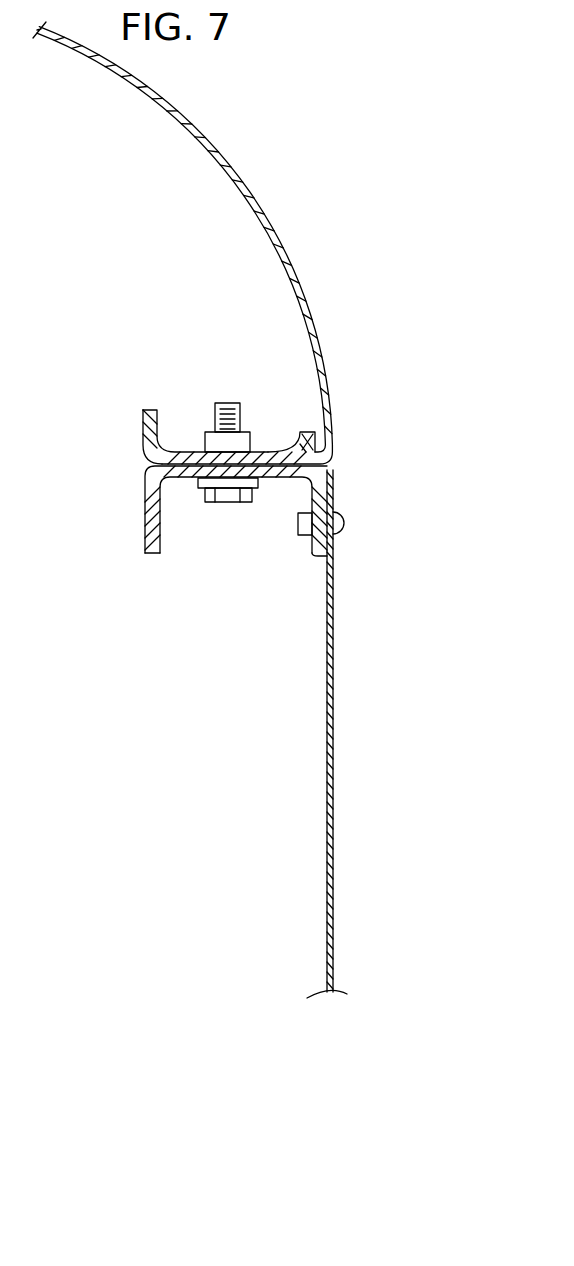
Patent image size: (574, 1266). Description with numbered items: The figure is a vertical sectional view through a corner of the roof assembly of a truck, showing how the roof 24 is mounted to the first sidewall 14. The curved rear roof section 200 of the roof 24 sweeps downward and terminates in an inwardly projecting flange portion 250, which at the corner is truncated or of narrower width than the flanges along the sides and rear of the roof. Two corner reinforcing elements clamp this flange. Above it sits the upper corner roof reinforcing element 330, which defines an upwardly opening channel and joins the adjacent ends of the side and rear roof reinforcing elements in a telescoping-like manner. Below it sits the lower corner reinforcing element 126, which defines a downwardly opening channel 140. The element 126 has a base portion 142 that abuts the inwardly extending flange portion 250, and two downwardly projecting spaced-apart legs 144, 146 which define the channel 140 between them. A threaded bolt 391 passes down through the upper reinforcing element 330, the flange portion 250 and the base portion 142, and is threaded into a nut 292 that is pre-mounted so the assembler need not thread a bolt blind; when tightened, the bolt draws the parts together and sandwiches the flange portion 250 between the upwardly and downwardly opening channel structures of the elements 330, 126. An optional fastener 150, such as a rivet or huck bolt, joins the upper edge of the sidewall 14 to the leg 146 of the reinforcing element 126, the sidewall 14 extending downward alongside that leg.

The first sidewall 14 is at (334, 648).
The roof 24 is at (274, 216).
The rear roof section 200 is at (302, 303).
The upper corner roof reinforcing element 330 is at (190, 422).
The threaded bolt 391 is at (228, 410).
The nut 292 is at (250, 443).
The inwardly projecting flange portion 250 is at (292, 450).
The lower corner reinforcing element 126 is at (135, 513).
The downwardly opening channel 140 is at (263, 554).
The base portion 142 is at (174, 485).
The leg 144 is at (150, 536).
The leg 146 is at (325, 554).
The fastener 150 is at (345, 524).